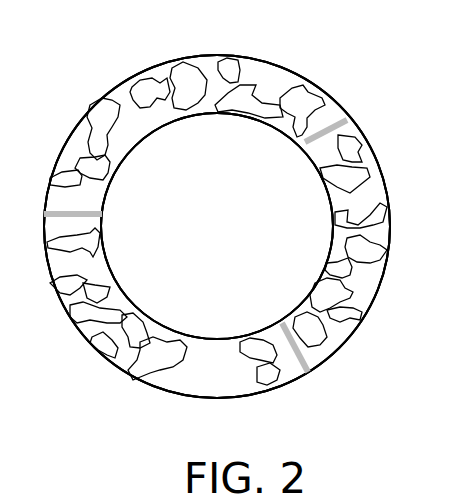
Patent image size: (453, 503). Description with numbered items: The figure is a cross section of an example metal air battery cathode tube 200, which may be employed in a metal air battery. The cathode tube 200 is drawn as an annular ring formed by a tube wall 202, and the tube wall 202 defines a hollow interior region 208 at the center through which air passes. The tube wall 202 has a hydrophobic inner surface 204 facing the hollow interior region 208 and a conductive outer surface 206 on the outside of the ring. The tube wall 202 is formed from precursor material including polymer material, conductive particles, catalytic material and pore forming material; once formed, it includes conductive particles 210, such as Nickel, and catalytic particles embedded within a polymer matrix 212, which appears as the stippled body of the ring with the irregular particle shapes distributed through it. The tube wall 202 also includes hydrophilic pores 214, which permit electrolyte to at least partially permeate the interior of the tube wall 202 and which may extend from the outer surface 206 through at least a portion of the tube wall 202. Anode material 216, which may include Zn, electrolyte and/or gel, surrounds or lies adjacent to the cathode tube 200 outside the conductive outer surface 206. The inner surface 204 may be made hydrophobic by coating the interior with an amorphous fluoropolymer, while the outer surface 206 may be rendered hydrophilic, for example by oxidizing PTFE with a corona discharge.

The cathode tube 200 is at (90, 417).
The tube wall 202 is at (196, 381).
The hydrophobic inner surface 204 is at (299, 292).
The conductive outer surface 206 is at (358, 347).
The hollow interior region 208 is at (197, 156).
The conductive particles 210 is at (179, 73).
The polymer matrix 212 is at (124, 100).
The hydrophilic pores 214 is at (359, 119).
The anode material 216 is at (25, 377).